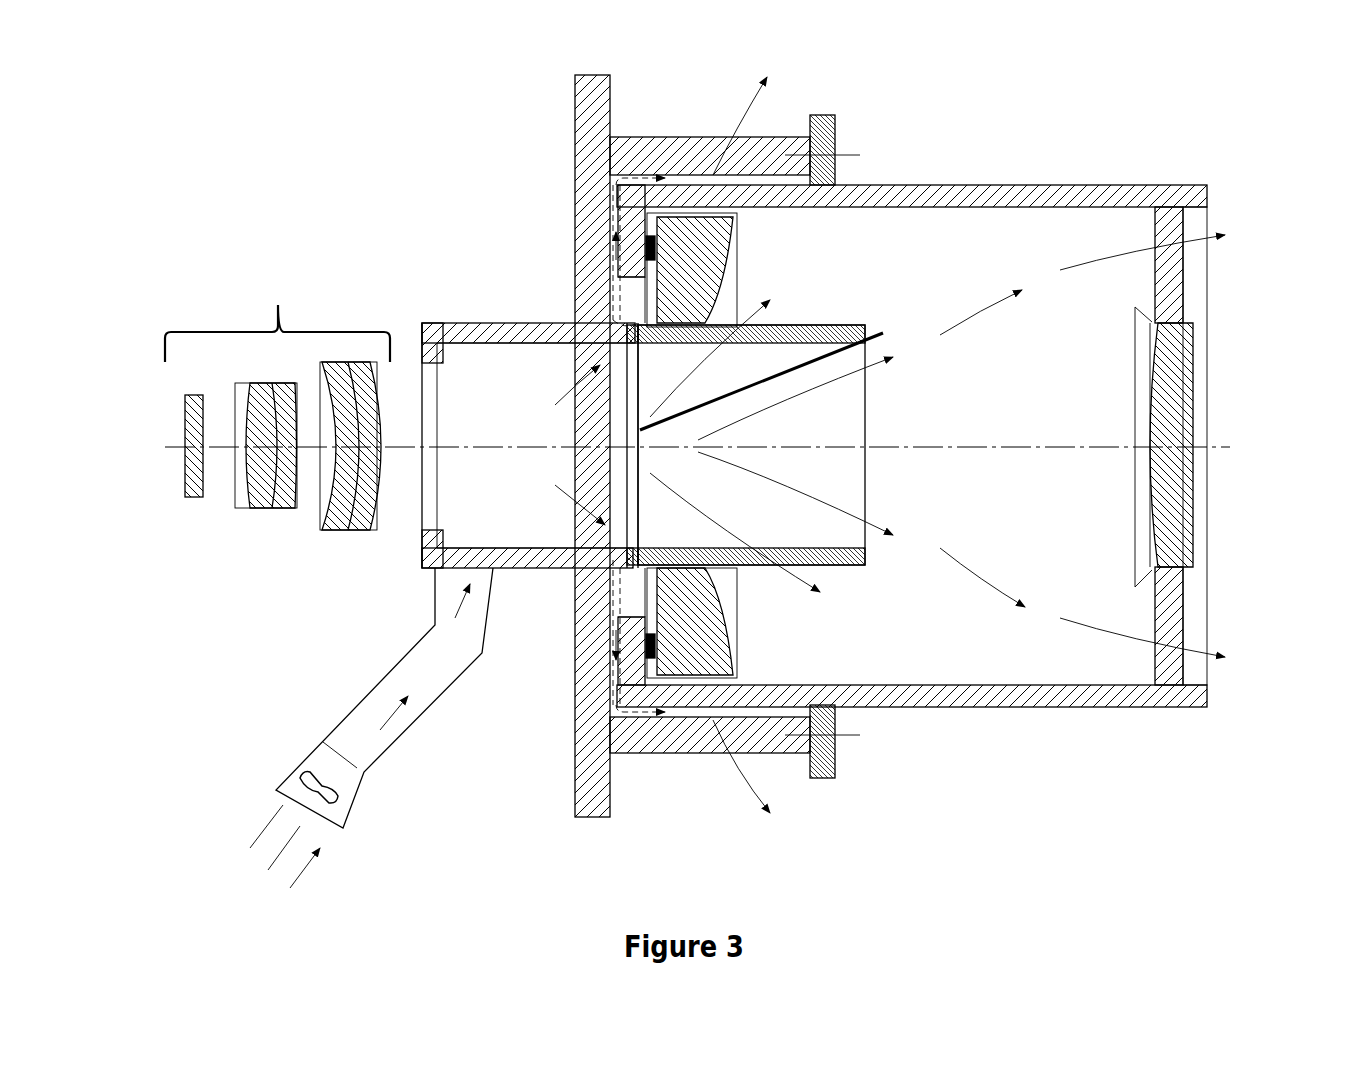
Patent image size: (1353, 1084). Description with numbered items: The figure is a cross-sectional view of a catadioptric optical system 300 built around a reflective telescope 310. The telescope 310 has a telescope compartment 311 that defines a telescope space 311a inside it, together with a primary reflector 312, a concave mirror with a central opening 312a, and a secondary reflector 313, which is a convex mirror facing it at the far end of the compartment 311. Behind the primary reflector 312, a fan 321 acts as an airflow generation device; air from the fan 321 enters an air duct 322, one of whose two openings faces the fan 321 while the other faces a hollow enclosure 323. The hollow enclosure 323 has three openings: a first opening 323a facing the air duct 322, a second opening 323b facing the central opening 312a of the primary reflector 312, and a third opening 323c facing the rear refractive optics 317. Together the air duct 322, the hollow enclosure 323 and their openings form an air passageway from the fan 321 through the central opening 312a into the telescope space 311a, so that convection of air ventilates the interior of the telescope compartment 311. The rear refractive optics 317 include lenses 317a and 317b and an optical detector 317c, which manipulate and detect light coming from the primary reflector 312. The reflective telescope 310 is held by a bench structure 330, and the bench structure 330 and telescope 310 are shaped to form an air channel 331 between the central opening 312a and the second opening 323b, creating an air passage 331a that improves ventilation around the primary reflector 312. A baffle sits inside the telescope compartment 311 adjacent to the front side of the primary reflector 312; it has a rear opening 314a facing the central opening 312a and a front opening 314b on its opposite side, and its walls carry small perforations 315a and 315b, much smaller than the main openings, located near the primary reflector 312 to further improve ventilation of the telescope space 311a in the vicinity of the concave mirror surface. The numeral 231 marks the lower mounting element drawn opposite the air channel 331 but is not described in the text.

The catadioptric optical system 300 is at (1052, 100).
The reflective telescope 310 is at (1213, 343).
The telescope compartment 311 is at (1068, 218).
The telescope space 311a is at (925, 245).
The primary reflector 312 is at (728, 635).
The central opening 312a is at (703, 323).
The secondary reflector 313 is at (1160, 552).
The rear opening 314a is at (640, 458).
The front opening 314b is at (865, 470).
The perforation 315a is at (800, 337).
The perforation 315b is at (803, 562).
The rear refractive optics 317 is at (277, 312).
The lens 317a is at (342, 533).
The lens 317b is at (255, 510).
The optical detector 317c is at (190, 498).
The fan 321 is at (335, 795).
The air duct 322 is at (425, 707).
The hollow enclosure 323 is at (542, 323).
The first opening 323a is at (482, 548).
The second opening 323b is at (632, 505).
The third opening 323c is at (427, 502).
The bench structure 330 is at (603, 108).
The air channel 331 is at (612, 195).
The air passage 331a is at (640, 323).
The lower mounting bar 231 is at (692, 712).